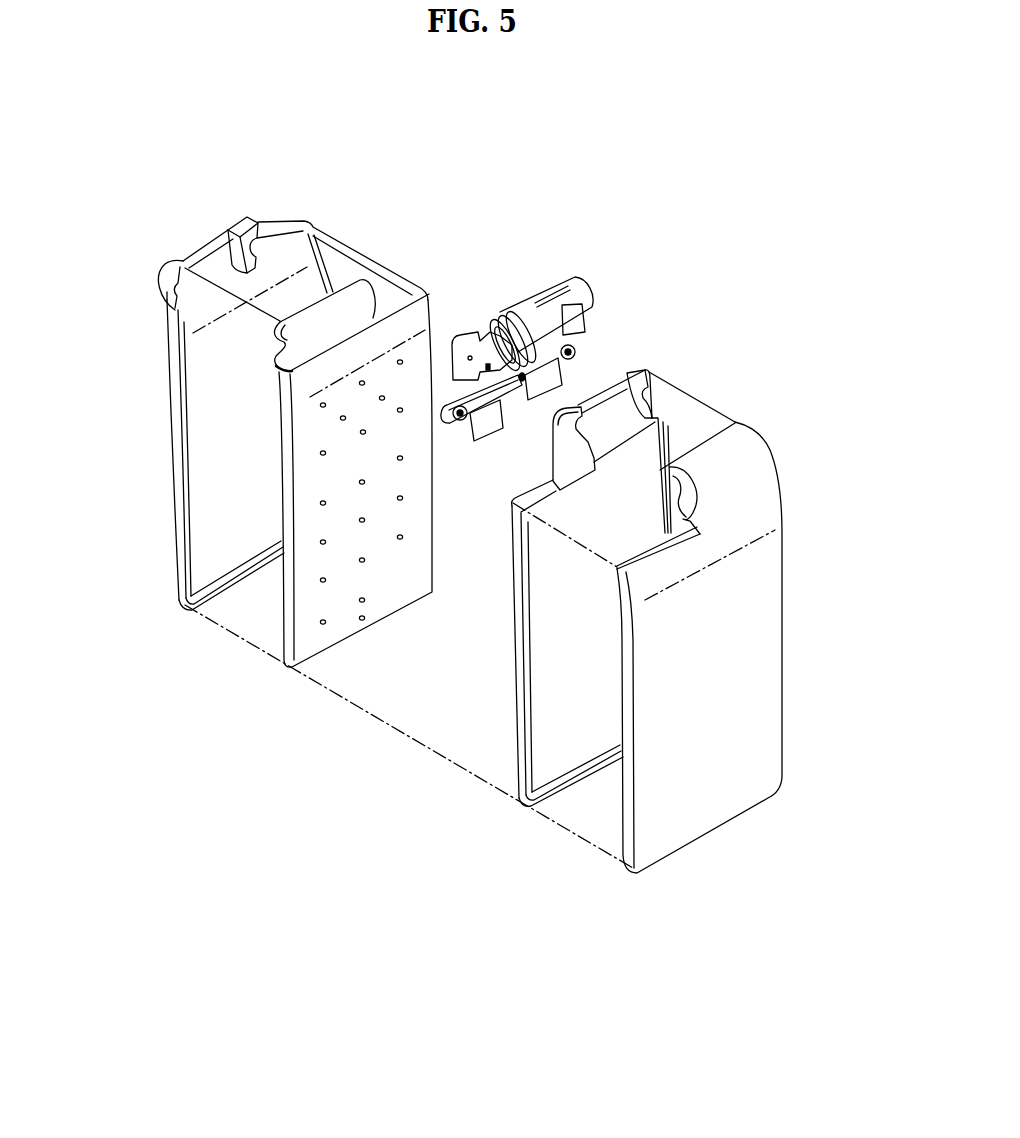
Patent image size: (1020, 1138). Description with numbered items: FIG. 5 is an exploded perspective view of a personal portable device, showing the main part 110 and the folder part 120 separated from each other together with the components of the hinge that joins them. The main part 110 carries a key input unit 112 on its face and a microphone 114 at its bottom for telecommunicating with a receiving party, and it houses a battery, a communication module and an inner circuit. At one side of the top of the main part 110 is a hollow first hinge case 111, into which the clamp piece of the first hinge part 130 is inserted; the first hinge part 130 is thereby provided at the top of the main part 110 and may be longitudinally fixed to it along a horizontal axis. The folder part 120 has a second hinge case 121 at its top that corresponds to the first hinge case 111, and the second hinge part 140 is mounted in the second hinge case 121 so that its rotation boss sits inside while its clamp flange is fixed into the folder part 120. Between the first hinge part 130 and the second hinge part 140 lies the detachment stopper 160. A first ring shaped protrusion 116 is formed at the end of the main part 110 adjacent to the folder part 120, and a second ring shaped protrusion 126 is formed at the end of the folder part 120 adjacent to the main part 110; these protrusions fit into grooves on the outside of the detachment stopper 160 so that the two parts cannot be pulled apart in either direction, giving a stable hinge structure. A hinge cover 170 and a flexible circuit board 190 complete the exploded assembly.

The main part 110 is at (265, 412).
The first hinge case 111 is at (288, 365).
The key input unit 112 is at (384, 491).
The microphone 114 is at (366, 622).
The first ring shaped protrusion 116 is at (251, 226).
The folder part 120 is at (711, 586).
The second hinge case 121 is at (731, 448).
The second ring shaped protrusion 126 is at (600, 368).
The first hinge part 130 is at (445, 428).
The second hinge part 140 is at (495, 442).
The detachment stopper 160 is at (501, 318).
The hinge cover 170 is at (577, 290).
The flexible circuit board 190 is at (463, 333).